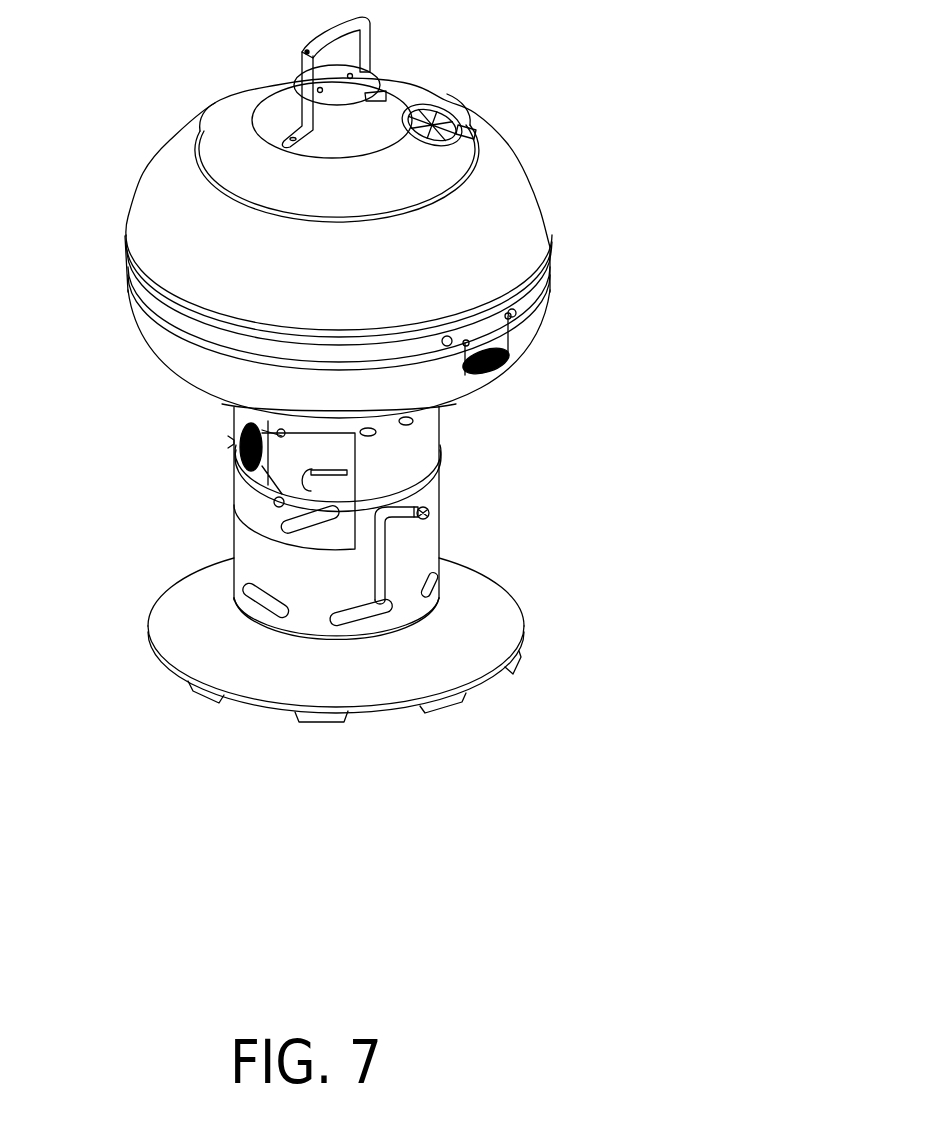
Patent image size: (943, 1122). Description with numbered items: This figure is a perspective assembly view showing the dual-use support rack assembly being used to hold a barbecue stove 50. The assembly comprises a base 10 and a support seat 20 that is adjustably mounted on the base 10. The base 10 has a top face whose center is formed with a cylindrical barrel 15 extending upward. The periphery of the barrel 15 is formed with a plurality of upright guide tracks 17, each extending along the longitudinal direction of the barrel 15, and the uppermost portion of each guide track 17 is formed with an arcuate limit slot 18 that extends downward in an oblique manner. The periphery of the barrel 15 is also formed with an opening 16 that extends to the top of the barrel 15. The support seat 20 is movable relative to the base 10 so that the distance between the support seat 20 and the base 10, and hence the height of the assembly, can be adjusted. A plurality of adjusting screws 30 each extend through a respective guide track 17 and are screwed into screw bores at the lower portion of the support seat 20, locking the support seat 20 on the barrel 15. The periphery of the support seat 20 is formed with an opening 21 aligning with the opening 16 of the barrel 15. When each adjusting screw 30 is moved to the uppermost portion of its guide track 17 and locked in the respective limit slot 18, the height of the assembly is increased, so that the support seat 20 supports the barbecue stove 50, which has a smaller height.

The base 10 is at (485, 643).
The cylindrical barrel 15 is at (307, 613).
The opening 16 is at (240, 508).
The upright guide tracks 17 is at (385, 552).
The arcuate limit slot 18 is at (433, 503).
The support seat 20 is at (412, 453).
The opening 21 is at (240, 458).
The adjusting screws 30 is at (430, 513).
The barbecue stove 50 is at (513, 215).